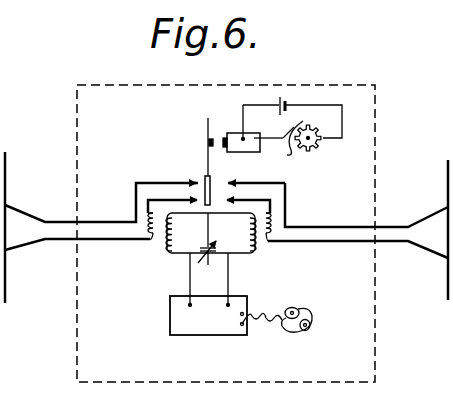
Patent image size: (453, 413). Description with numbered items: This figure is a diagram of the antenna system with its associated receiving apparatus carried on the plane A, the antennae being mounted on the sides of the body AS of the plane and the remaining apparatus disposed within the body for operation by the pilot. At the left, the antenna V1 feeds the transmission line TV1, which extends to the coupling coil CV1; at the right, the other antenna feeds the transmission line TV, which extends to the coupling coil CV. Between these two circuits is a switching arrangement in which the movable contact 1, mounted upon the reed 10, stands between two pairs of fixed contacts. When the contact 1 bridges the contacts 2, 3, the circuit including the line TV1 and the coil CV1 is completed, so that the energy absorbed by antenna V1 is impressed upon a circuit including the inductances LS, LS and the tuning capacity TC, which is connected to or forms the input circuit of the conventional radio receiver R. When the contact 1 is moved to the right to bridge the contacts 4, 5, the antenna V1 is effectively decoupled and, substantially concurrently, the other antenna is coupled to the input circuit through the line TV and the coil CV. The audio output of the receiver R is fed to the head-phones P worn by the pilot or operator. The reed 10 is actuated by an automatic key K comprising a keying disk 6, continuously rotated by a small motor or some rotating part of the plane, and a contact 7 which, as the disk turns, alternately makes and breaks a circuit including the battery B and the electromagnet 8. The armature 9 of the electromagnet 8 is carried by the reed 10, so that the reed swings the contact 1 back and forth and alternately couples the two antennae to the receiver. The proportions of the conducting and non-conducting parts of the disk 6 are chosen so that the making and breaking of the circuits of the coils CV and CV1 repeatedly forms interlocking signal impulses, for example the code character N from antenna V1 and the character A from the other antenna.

The movable contact 1 is at (212, 181).
The contact 2 is at (200, 181).
The contact 3 is at (198, 203).
The contact 4 is at (232, 184).
The contact 5 is at (228, 203).
The keying disk 6 is at (316, 149).
The contact 7 is at (293, 146).
The electromagnet 8 is at (258, 152).
The armature 9 is at (214, 140).
The reed 10 is at (206, 133).
The plane A is at (338, 85).
The body of the plane AS is at (78, 134).
The battery B is at (288, 106).
The automatic key K is at (236, 110).
The head-phones P is at (312, 316).
The radio receiver R is at (198, 328).
The tuning capacity TC is at (218, 238).
The inductance LS is at (211, 235).
The coupling coil CV is at (264, 238).
The coupling coil CV1 is at (152, 238).
The transmission line TV is at (436, 212).
The transmission line TV1 is at (104, 228).
The antenna V1 is at (6, 180).